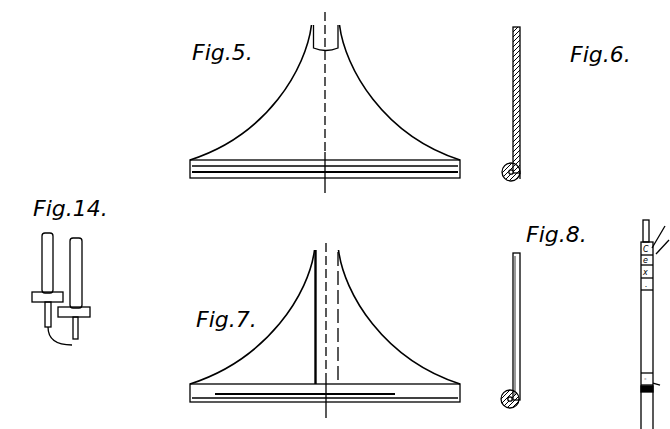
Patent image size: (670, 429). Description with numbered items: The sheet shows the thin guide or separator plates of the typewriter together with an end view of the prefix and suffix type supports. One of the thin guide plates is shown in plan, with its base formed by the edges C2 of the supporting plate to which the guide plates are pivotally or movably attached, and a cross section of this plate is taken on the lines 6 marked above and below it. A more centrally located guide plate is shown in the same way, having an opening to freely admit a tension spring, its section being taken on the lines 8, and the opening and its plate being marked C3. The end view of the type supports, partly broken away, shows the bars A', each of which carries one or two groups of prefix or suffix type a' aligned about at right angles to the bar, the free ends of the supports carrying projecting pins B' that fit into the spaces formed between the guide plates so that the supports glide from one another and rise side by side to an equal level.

In FIG. 5, the edges of plate C2 is at (340, 45).
In FIG. 6, the edges of plate C2 is at (514, 48).
In FIG. 7, the spring clip with split vertical stem C3 is at (336, 316).
In FIG. 8, the spring clip with split vertical stem C3 is at (514, 291).
In FIG. 5, the section line 6 is at (315, 104).
In FIG. 7, the section line 8 is at (316, 330).
In FIG. 14, the type bar A' is at (93, 270).
In FIG. 14, the type a' is at (84, 289).
In FIG. 14, the projecting pins B' is at (75, 328).